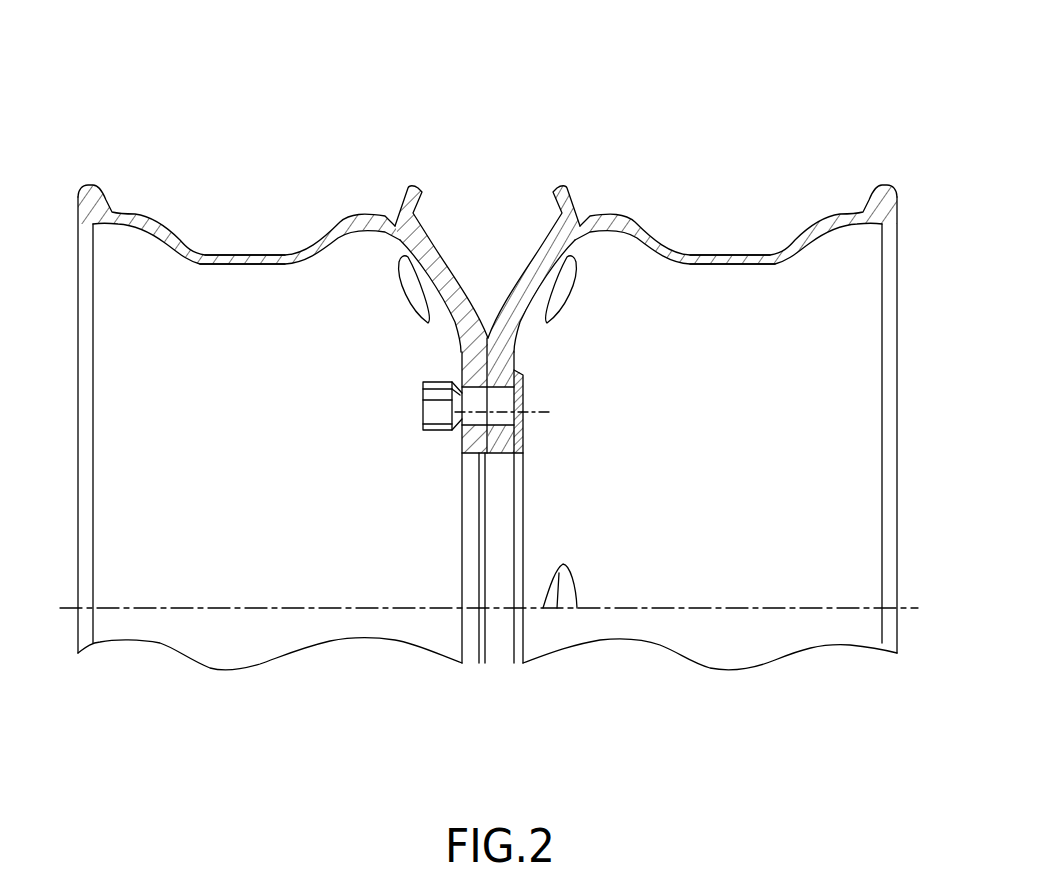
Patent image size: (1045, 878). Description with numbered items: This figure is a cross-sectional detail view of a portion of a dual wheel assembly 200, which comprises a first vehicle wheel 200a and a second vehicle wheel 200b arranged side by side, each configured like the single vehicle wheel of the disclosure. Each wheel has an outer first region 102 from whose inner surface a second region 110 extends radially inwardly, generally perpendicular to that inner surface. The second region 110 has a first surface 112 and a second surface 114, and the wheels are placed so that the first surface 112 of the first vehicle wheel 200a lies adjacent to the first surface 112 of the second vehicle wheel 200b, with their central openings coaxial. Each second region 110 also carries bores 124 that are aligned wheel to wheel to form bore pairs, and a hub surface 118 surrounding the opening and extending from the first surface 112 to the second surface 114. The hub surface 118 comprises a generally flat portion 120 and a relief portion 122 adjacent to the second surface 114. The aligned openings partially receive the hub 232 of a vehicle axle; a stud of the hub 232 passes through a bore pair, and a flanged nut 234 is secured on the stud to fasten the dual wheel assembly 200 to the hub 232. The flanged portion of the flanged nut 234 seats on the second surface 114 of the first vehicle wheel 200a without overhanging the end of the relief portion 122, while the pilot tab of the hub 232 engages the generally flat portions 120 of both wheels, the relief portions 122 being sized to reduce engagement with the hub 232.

The dual wheel assembly 200 is at (345, 125).
The first vehicle wheel 200a is at (117, 212).
The second vehicle wheel 200b is at (628, 234).
The first region 102 is at (249, 253).
The second region 110 is at (431, 231).
The first surface 112 is at (448, 281).
The second surface 114 is at (456, 350).
The hub surface 118 is at (346, 455).
The generally flat portion 120 is at (480, 454).
The relief portion 122 is at (474, 496).
The bore 124 is at (470, 396).
The hub 232 is at (500, 551).
The flanged nut 234 is at (437, 413).